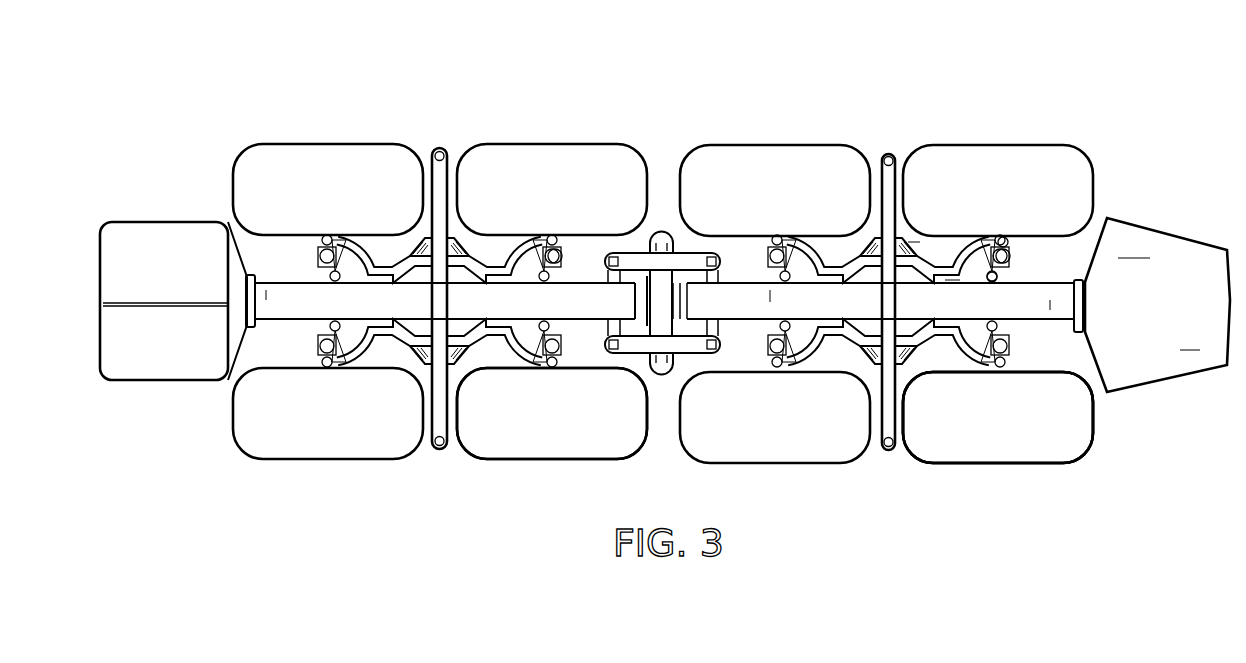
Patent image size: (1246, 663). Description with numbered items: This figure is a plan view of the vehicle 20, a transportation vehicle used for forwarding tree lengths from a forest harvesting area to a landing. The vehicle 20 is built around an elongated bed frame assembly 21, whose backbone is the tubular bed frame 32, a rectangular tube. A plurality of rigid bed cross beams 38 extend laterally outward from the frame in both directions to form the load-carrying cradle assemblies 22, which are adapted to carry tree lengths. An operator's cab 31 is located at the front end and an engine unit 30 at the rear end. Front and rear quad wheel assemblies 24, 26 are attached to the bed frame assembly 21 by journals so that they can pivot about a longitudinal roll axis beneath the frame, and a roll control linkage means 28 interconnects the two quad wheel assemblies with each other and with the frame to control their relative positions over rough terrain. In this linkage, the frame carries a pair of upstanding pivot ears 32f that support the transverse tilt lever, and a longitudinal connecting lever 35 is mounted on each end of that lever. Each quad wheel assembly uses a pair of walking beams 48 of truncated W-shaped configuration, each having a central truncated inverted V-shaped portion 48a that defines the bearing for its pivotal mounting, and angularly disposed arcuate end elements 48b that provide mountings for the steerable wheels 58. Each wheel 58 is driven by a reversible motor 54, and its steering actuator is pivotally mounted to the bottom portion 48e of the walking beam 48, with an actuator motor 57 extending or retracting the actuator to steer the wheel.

The vehicle 20 is at (1104, 408).
The elongated bed frame assembly 21 is at (711, 312).
The load-carrying cradle assembly 22 is at (453, 162).
The front quad wheel assembly 24 is at (534, 466).
The rear quad wheel assembly 26 is at (968, 468).
The roll control linkage means 28 is at (662, 257).
The engine unit 30 is at (1141, 317).
The operator's cab 31 is at (166, 262).
The tubular bed frame 32 is at (493, 312).
The upstanding pivot ears 32f is at (636, 312).
The longitudinal connecting lever 35 is at (694, 257).
The bed cross beam 38 is at (432, 295).
The walking beam 48 is at (502, 262).
The central truncated inverted V-shaped portion 48a is at (410, 360).
The arcuate end element 48b is at (542, 237).
The bottom portion of walking beam 48e is at (908, 242).
The reversible motor 54 is at (1013, 257).
The actuator motor 57 is at (1010, 282).
The wheel 58 is at (553, 143).